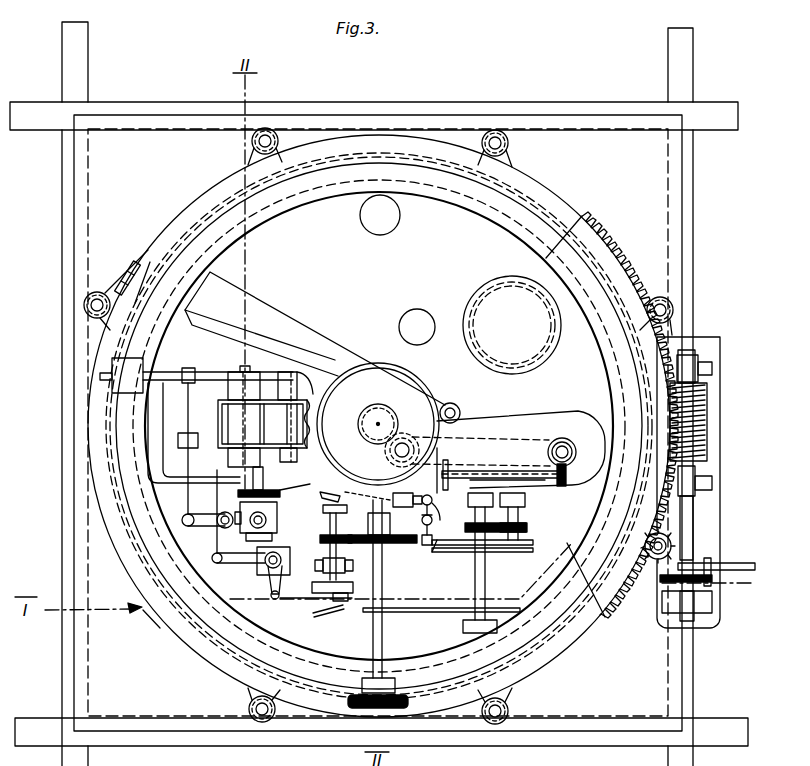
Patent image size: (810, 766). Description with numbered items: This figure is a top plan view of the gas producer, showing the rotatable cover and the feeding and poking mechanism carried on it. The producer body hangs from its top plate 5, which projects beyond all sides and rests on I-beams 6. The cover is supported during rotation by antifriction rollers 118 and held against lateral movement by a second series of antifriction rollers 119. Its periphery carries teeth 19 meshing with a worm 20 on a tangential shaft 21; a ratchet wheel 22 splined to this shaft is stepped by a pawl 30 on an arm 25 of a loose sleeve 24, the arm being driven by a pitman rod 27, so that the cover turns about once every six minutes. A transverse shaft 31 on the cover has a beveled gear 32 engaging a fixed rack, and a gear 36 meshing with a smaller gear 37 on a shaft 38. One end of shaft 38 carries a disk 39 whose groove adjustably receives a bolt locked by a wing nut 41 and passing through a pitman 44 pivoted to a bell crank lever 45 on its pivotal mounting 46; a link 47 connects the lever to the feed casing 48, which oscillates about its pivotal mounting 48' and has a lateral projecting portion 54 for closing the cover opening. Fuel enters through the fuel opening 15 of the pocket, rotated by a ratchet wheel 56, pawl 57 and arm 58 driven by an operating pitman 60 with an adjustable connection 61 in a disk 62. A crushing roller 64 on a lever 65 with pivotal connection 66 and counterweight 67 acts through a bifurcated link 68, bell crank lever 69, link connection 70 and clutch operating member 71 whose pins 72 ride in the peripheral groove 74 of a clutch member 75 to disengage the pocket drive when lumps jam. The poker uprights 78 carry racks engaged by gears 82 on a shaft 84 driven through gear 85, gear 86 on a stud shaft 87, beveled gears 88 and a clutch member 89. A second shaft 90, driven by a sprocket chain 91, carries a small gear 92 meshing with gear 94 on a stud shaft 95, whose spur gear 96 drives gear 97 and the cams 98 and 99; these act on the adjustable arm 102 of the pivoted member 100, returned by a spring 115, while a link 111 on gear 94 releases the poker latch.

The top plate 5 is at (378, 423).
The I-beams 6 is at (664, 93).
The fuel opening 15 is at (290, 420).
The teeth 19 is at (625, 618).
The worm 20 is at (708, 452).
The shaft 21 is at (695, 510).
The ratchet wheel 22 is at (668, 572).
The sleeve 24 is at (690, 566).
The arm 25 is at (710, 580).
The pitman rod 27 is at (744, 564).
The pawl 30 is at (714, 593).
The shaft 31 is at (383, 645).
The beveled gear 32 is at (409, 703).
The gear 36 is at (405, 543).
The gear 37 is at (320, 538).
The shaft 38 is at (322, 557).
The disk 39 is at (312, 586).
The wing nut 41 is at (334, 612).
The pitman 44 is at (310, 600).
The bell crank lever 45 is at (268, 585).
The pivotal mounting 46 is at (262, 566).
The link 47 is at (214, 548).
The casing 48 is at (312, 397).
The pivotal mounting 48' is at (521, 436).
The laterally extending projecting portion 54 is at (258, 305).
The ratchet wheel 56 is at (236, 493).
The pawl 57 is at (240, 499).
The arm 58 is at (278, 510).
The operating pitman 60 is at (290, 490).
The adjustable connection 61 is at (344, 496).
The disk 62 is at (328, 511).
The crushing roller 64 is at (262, 416).
The lever 65 is at (203, 375).
The pivotal connection 66 is at (310, 409).
The counterweight 67 is at (121, 375).
The bifurcated link 68 is at (188, 368).
The bell crank lever 69 is at (190, 408).
The link connection 70 is at (165, 478).
The clutch operating member 71 is at (205, 527).
The pins 72 is at (250, 530).
The peripheral groove 74 is at (268, 522).
The clutch member 75 is at (272, 538).
The hollow upright 78 is at (565, 442).
The gears 82 is at (396, 462).
The shaft 84 is at (490, 472).
The gear 85 is at (448, 468).
The gear 86 is at (434, 506).
The stud shaft 87 is at (424, 491).
The beveled gears 88 is at (379, 497).
The clutch member 89 is at (432, 523).
The second shaft 90 is at (486, 586).
The sprocket chain 91 is at (460, 612).
The small gear 92 is at (510, 480).
The gear 94 is at (520, 506).
The stud shaft 95 is at (520, 518).
The spur gear 96 is at (527, 529).
The gear 97 is at (478, 534).
The cam 98 is at (533, 544).
The cam 99 is at (528, 551).
The pivoted member 100 is at (414, 534).
The adjustable arm 102 is at (437, 553).
The link 111 is at (460, 505).
The spring 115 is at (413, 518).
The antifriction rollers 118 is at (130, 270).
The antifriction rollers 119 is at (252, 143).